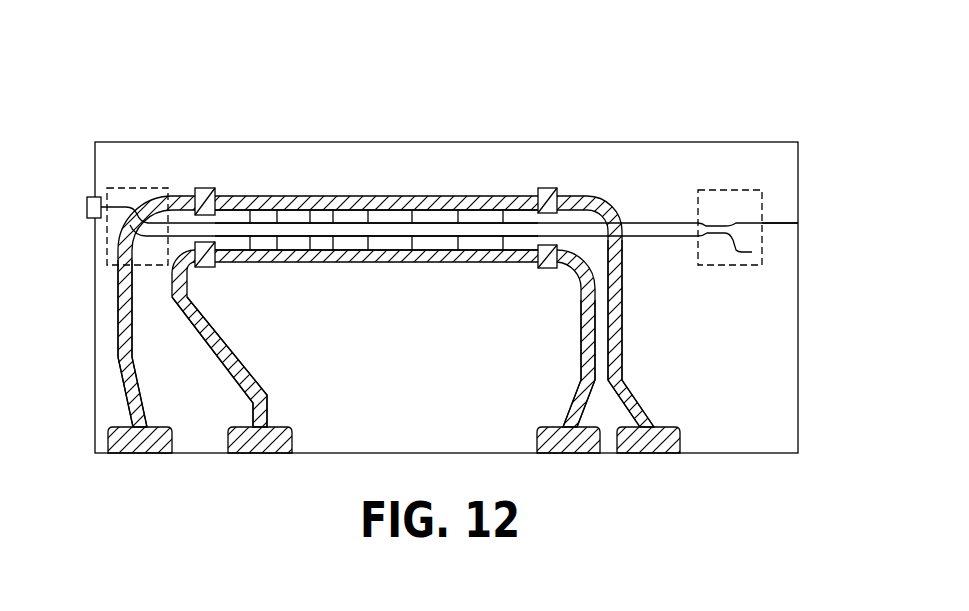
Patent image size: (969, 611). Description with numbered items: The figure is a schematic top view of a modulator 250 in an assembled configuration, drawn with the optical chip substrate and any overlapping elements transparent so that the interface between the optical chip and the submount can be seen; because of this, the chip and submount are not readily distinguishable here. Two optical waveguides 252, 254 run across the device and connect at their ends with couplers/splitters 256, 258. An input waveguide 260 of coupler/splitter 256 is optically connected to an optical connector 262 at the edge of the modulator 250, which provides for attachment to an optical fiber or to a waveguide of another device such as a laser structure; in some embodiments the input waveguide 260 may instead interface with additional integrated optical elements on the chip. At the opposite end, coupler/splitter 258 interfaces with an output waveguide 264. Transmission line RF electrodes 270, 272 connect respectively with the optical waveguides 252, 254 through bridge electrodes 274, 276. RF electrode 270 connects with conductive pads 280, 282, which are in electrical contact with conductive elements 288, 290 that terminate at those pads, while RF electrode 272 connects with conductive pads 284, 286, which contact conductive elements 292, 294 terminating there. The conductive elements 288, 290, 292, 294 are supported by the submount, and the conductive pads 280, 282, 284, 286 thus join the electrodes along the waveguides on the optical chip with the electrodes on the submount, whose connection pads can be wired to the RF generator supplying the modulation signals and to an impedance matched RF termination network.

The modulator 250 is at (447, 84).
The optical waveguide 252 is at (636, 221).
The optical waveguide 254 is at (641, 238).
The coupler/splitter 256 is at (122, 187).
The coupler/splitter 258 is at (715, 189).
The input waveguide 260 is at (114, 241).
The optical connector 262 is at (87, 208).
The output waveguide 264 is at (778, 223).
The transmission line RF electrode 270 is at (286, 194).
The transmission line RF electrode 272 is at (320, 263).
The bridge electrode 274 is at (413, 219).
The bridge electrode 276 is at (460, 242).
The conductive pad 280 is at (205, 187).
The conductive pad 282 is at (546, 187).
The conductive pad 284 is at (205, 268).
The conductive pad 286 is at (547, 269).
The conductive element 288 is at (118, 332).
The conductive element 290 is at (623, 360).
The conductive element 292 is at (253, 378).
The conductive element 294 is at (575, 392).